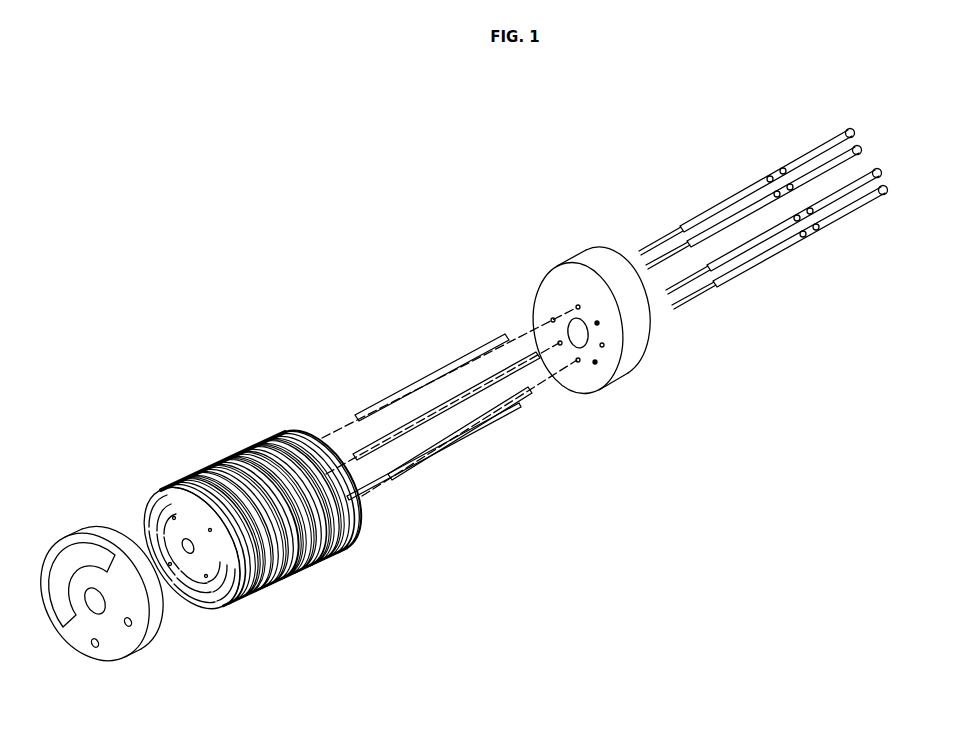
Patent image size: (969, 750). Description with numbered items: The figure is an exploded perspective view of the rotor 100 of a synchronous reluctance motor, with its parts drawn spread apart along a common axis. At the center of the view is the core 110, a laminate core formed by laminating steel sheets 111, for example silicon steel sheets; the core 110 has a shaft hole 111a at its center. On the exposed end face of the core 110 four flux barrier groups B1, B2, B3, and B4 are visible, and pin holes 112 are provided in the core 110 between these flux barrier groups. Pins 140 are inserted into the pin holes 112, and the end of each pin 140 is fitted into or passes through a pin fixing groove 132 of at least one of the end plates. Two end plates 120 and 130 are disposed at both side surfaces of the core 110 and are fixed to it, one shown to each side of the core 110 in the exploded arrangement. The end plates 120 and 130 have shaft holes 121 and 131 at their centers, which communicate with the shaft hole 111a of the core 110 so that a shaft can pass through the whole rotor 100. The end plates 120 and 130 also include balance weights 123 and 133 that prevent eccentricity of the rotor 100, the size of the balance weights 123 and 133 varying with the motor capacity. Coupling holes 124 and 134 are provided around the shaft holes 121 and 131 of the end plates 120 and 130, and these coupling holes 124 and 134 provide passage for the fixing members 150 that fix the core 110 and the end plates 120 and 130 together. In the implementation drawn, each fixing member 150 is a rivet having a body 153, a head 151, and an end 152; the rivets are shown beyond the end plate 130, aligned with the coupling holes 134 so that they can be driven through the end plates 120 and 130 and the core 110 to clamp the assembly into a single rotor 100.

The rotor 100 is at (288, 302).
The core 110 is at (260, 434).
The steel sheet 111 is at (228, 460).
The shaft hole 111a is at (243, 598).
The pin hole 112 is at (160, 490).
The end plate 120 is at (95, 548).
The shaft hole 121 is at (100, 612).
The balance weight 123 is at (60, 563).
The coupling hole 124 is at (96, 648).
The end plate 130 is at (572, 268).
The shaft hole 131 is at (590, 352).
The pin fixing groove 132 is at (562, 305).
The balance weight 133 is at (655, 345).
The coupling hole 134 is at (633, 347).
The pin 140 is at (447, 372).
The fixing member 150 is at (784, 226).
The head 151 is at (889, 197).
The end 152 is at (718, 290).
The body 153 is at (770, 250).
The flux barrier group B1 is at (165, 486).
The flux barrier group B2 is at (118, 526).
The flux barrier group B3 is at (192, 614).
The flux barrier group B4 is at (256, 601).